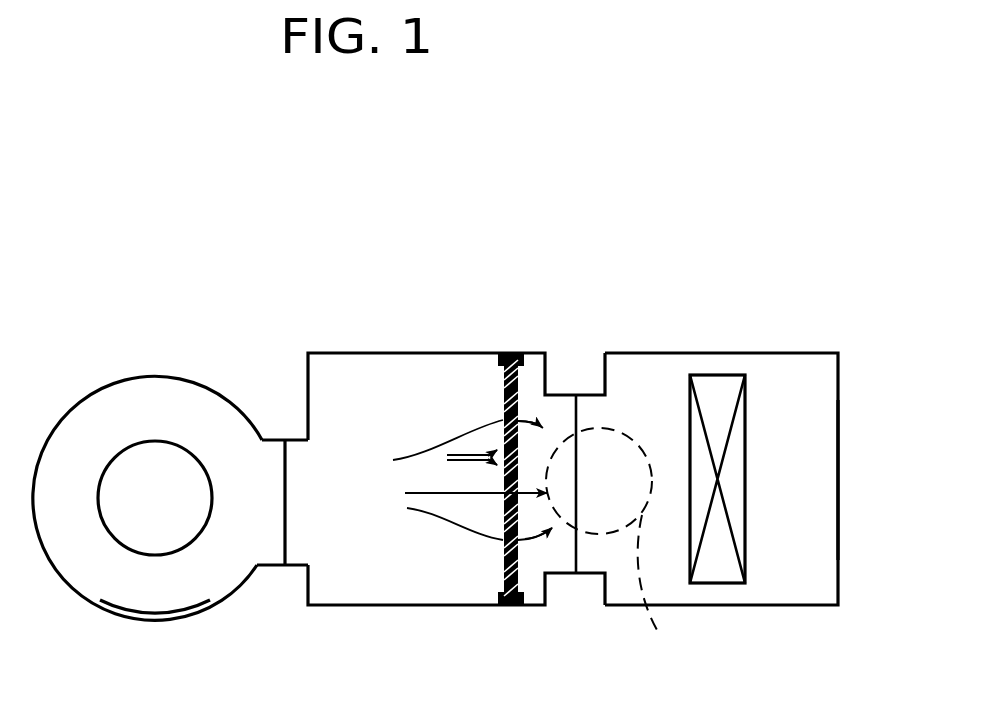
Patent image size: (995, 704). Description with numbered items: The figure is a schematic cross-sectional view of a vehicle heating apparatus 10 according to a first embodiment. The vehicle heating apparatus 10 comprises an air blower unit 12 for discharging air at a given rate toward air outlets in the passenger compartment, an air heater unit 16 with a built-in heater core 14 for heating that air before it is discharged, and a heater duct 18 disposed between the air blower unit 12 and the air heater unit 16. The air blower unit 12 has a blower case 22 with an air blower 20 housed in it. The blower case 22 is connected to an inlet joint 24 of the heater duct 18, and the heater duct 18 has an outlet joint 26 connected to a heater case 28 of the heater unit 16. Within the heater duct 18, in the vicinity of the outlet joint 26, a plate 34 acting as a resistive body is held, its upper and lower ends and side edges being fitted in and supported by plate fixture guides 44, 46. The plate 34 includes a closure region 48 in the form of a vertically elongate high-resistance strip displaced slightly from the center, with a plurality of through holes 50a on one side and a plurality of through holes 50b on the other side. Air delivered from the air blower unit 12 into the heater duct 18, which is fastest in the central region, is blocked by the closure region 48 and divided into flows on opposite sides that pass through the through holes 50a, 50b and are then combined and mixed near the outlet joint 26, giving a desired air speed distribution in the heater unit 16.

The vehicle heating apparatus 10 is at (667, 172).
The air blower unit 12 is at (160, 372).
The heater core 14 is at (722, 378).
The air heater unit 16 is at (817, 350).
The heater duct 18 is at (387, 351).
The air blower 20 is at (127, 533).
The blower case 22 is at (158, 620).
The inlet joint 24 is at (287, 426).
The outlet joint 26 is at (577, 392).
The heater case 28 is at (838, 492).
The plate 34 is at (500, 577).
The plate fixture guide 44 is at (530, 521).
The plate fixture guide 46 is at (509, 606).
The closure region 48 is at (520, 452).
The through holes 50a is at (522, 553).
The through holes 50b is at (503, 403).